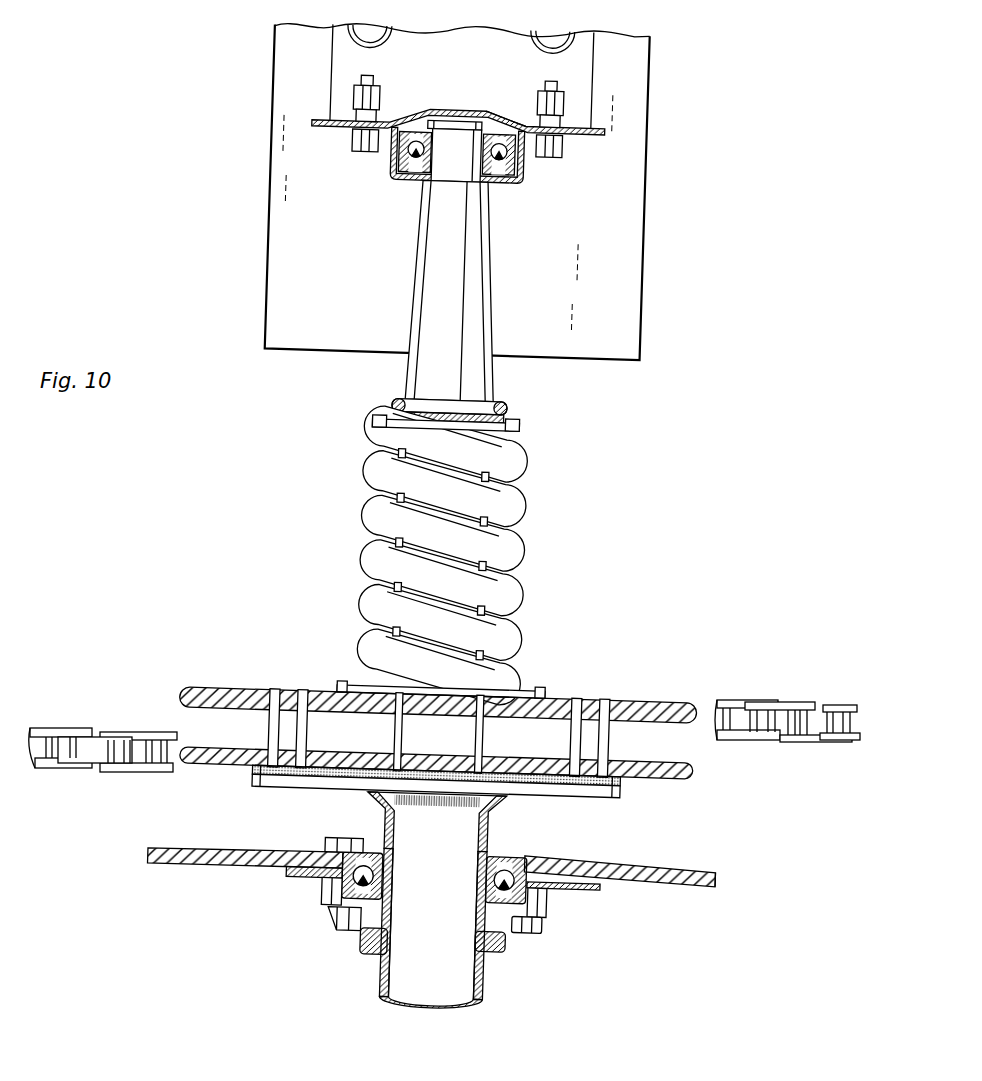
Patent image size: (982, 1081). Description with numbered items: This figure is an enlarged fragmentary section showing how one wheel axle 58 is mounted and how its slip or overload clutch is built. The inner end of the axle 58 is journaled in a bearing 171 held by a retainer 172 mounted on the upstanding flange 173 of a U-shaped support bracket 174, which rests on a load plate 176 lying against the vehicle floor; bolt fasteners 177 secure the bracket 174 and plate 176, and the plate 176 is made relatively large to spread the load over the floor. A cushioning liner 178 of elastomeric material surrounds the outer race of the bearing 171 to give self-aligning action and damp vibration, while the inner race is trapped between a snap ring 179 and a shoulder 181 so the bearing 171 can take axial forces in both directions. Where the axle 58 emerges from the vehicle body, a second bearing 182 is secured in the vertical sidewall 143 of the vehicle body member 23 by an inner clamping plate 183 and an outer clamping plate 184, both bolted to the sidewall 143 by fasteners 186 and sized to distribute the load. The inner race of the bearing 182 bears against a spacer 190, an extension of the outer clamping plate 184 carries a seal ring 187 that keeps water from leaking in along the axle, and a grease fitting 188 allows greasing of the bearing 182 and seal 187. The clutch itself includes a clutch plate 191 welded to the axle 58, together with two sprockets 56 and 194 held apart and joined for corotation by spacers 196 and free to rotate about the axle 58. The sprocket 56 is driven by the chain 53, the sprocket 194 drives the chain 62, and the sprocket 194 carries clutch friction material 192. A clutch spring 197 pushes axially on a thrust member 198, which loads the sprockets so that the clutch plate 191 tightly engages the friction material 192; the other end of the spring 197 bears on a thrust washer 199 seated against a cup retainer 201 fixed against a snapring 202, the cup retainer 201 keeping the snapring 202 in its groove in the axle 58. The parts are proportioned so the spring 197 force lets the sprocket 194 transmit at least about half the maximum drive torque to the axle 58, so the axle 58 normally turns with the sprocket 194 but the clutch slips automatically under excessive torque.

The vehicle body member 23 is at (721, 894).
The chain 53 is at (756, 741).
The sprocket 56 is at (648, 706).
The axle 58 is at (395, 986).
The chain 62 is at (118, 770).
The vertical sidewall 143 is at (713, 872).
The bearing 171 is at (401, 163).
The retainer 172 is at (505, 176).
The upstanding flange 173 is at (400, 118).
The support bracket 174 is at (340, 60).
The load plate 176 is at (641, 199).
The bolt fasteners 177 is at (366, 42).
The cushioning liner 178 is at (507, 125).
The snap ring 179 is at (464, 119).
The shoulder 181 is at (456, 156).
The second bearing 182 is at (394, 871).
The inner clamping plate 183 is at (606, 849).
The outer clamping plate 184 is at (566, 889).
The fasteners 186 is at (542, 918).
The seal ring 187 is at (502, 946).
The grease fitting 188 is at (345, 932).
The spacer 190 is at (382, 819).
The clutch plate 191 is at (531, 794).
The clutch friction material 192 is at (622, 786).
The sprocket 194 is at (666, 766).
The spacers 196 is at (304, 728).
The clutch spring 197 is at (529, 548).
The thrust member 198 is at (538, 690).
The thrust washer 199 is at (521, 427).
The cup retainer 201 is at (506, 413).
The snapring 202 is at (499, 402).